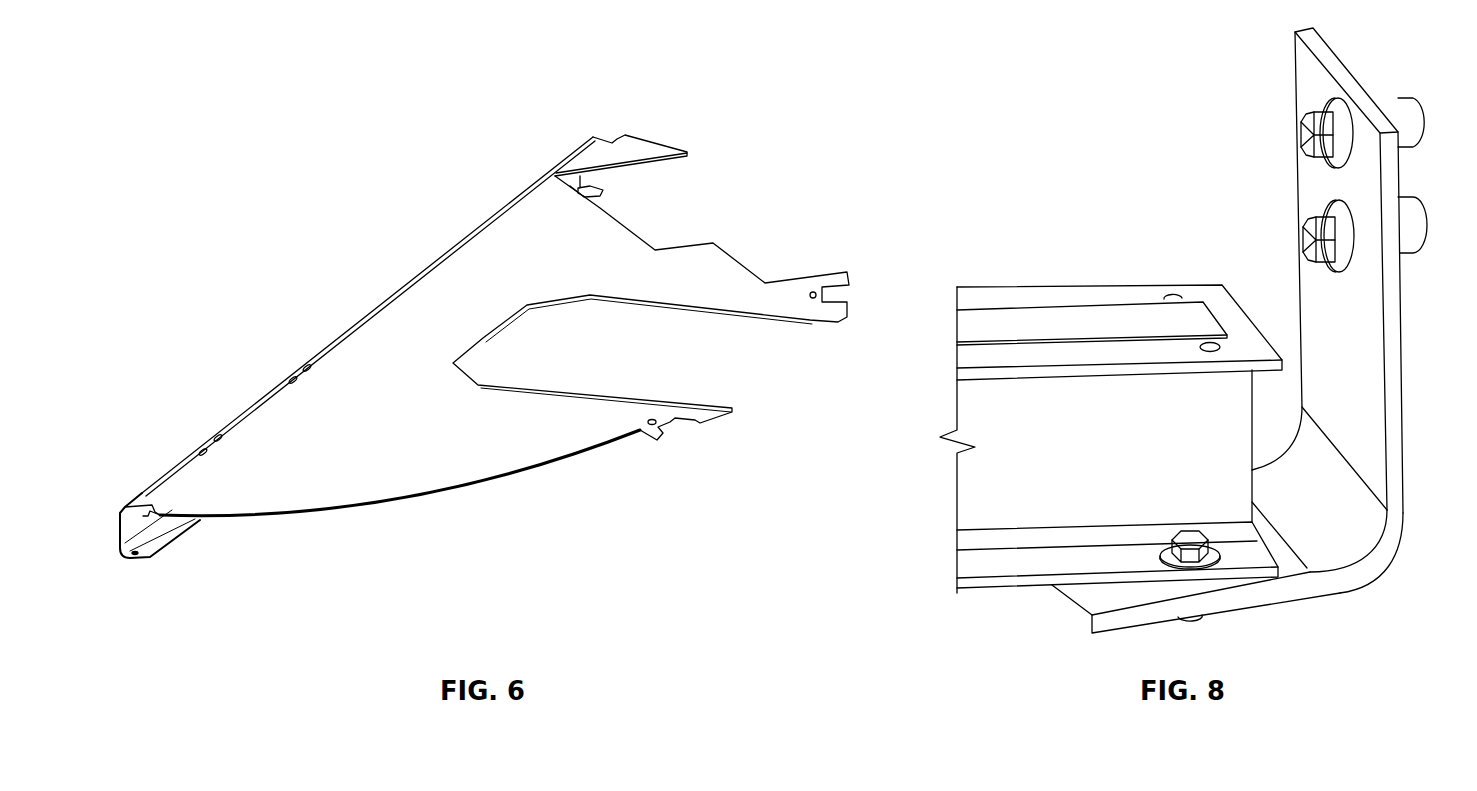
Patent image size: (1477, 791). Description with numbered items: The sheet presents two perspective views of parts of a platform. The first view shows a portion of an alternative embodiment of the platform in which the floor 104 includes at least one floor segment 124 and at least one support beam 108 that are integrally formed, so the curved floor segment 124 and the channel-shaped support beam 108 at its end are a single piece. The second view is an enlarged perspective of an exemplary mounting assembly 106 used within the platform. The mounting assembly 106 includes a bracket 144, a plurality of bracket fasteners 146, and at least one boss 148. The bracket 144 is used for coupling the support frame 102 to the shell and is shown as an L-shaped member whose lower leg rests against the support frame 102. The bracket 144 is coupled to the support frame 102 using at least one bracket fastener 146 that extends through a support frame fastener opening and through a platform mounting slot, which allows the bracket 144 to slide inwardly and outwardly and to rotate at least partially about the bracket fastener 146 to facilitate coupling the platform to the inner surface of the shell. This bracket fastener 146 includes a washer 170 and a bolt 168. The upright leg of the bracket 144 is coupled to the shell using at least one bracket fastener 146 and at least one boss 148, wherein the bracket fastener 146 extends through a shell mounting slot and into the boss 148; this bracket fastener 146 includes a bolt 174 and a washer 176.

In FIG. 8, the support frame 102 is at (1038, 500).
In FIG. 6, the floor 104 is at (562, 488).
In FIG. 8, the mounting assembly 106 is at (945, 62).
In FIG. 6, the support beam 108 is at (138, 532).
In FIG. 6, the floor segment 124 is at (302, 497).
In FIG. 8, the bracket 144 is at (1382, 593).
In FIG. 8, the bracket fastener 146 is at (1324, 174).
In FIG. 8, the boss 148 is at (1395, 105).
In FIG. 8, the bolt 168 is at (1187, 537).
In FIG. 8, the washer 170 is at (1217, 547).
In FIG. 8, the bolt 174 is at (1305, 138).
In FIG. 8, the washer 176 is at (1322, 106).